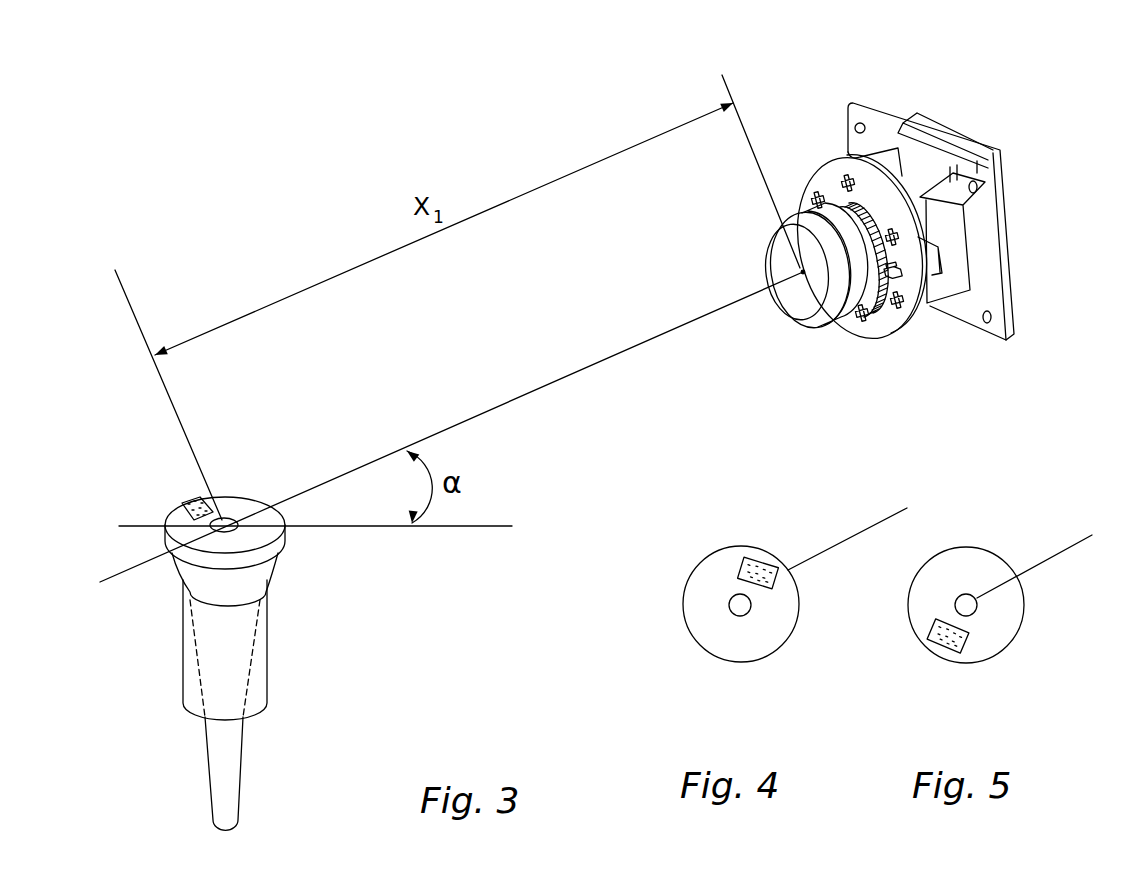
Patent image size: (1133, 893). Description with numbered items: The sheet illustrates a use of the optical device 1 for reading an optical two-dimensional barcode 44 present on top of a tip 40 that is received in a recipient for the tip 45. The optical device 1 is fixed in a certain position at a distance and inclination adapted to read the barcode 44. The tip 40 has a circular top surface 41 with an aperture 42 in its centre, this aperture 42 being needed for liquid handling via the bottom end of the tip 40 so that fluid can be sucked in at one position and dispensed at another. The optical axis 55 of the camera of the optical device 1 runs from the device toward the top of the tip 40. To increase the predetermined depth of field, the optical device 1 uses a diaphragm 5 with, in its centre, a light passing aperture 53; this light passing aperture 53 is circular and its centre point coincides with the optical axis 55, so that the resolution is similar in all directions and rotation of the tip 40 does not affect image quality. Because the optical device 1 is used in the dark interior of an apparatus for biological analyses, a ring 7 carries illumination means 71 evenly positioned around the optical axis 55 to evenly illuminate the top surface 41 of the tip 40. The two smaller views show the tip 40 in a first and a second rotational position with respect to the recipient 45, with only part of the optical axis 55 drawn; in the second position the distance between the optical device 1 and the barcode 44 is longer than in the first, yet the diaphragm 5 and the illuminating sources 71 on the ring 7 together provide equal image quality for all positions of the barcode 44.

In FIG. 3, the optical device 1 is at (790, 110).
In FIG. 3, the diaphragm 5 is at (815, 301).
In FIG. 3, the ring 7 is at (890, 333).
In FIG. 3, the light passing aperture 53 is at (795, 283).
In FIG. 3, the illumination means 71 is at (853, 323).
In FIG. 3, the optical axis 55 is at (627, 352).
In FIG. 4, the optical axis 55 is at (830, 550).
In FIG. 5, the optical axis 55 is at (1053, 557).
In FIG. 3, the tip 40 is at (234, 526).
In FIG. 3, the top surface 41 is at (258, 498).
In FIG. 3, the aperture 42 is at (237, 508).
In FIG. 3, the 2-D barcode 44 is at (189, 502).
In FIG. 4, the 2-D barcode 44 is at (763, 550).
In FIG. 5, the 2-D barcode 44 is at (943, 643).
In FIG. 3, the recipient for the tip 45 is at (258, 672).